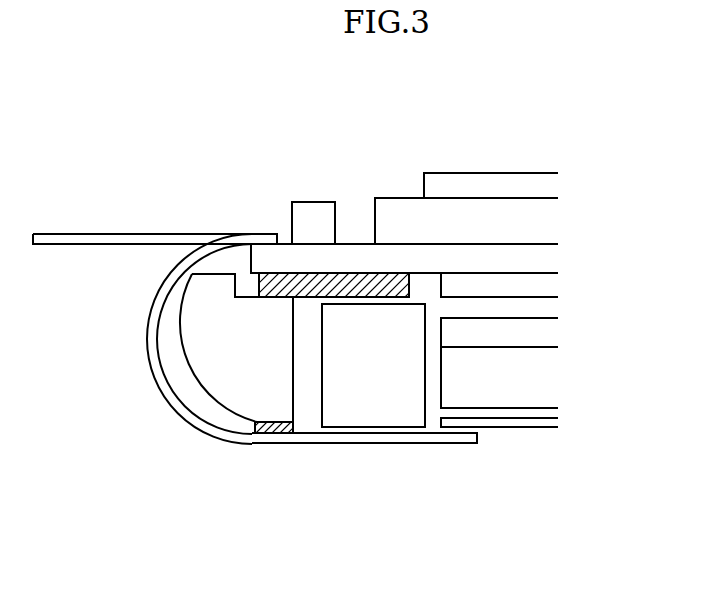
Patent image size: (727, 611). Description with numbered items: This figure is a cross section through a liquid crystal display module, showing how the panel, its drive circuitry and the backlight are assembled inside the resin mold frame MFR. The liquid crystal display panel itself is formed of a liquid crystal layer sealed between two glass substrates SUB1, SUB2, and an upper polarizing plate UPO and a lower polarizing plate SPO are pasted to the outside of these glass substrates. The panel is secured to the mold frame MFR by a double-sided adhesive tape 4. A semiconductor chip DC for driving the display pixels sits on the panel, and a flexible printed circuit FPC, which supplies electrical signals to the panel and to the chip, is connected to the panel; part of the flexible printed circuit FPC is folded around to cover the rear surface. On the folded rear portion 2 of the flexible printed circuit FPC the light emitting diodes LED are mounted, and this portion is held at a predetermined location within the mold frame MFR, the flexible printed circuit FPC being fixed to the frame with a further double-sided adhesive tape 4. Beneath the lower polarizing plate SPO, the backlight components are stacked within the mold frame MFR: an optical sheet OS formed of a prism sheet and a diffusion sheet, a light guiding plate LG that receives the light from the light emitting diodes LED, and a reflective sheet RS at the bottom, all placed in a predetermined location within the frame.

The flexible printed circuit FPC is at (147, 327).
The portion on which light emitting diodes are mounted 2 is at (387, 443).
The semiconductor chip DC is at (312, 227).
The glass substrate SUB1 is at (517, 227).
The glass substrate SUB2 is at (517, 263).
The upper polarizing plate UPO is at (502, 187).
The double-sided adhesive tape 4 is at (353, 290).
The mold frame MFR is at (248, 355).
The light emitting diodes LED is at (357, 393).
The lower polarizing plate SPO is at (517, 288).
The optical sheet OS is at (517, 333).
The light guiding plate LG is at (517, 374).
The reflective sheet RS is at (517, 422).